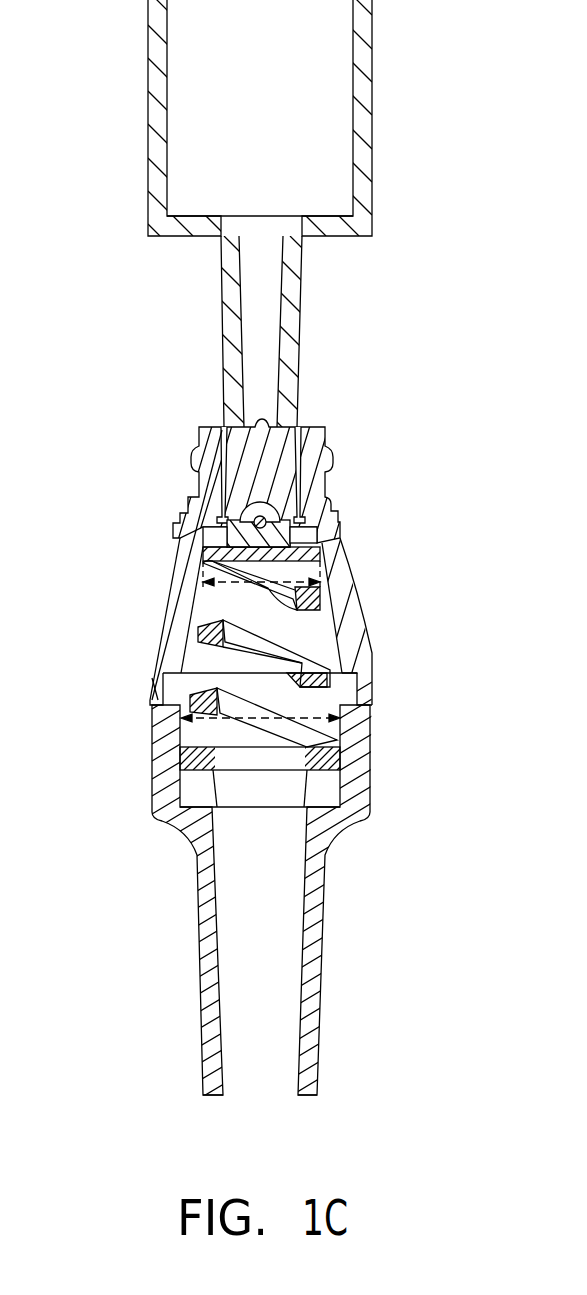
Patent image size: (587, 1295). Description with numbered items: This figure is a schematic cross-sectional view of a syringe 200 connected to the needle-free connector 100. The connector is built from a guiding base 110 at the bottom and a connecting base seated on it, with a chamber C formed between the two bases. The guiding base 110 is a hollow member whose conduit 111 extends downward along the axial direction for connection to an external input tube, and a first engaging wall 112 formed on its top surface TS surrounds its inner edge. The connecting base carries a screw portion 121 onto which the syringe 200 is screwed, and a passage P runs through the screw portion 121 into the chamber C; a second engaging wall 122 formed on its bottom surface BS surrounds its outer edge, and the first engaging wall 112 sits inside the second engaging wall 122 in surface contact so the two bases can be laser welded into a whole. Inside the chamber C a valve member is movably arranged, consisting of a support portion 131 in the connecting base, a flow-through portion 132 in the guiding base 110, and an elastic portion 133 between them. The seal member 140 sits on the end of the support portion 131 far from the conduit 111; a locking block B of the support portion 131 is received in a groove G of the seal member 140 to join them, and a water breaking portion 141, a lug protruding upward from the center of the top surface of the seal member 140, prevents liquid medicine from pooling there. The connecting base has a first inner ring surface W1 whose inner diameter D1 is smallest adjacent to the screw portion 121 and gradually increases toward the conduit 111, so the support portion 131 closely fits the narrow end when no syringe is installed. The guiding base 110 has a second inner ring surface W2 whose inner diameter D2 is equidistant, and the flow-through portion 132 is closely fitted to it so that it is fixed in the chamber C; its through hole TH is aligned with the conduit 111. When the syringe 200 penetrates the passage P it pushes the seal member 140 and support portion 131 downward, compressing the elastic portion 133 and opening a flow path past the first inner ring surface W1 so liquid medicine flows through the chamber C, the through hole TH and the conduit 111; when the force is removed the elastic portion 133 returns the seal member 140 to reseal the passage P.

The syringe 200 is at (363, 128).
The seal member 140 is at (270, 450).
The water breaking portion 141 is at (262, 498).
The locking block B is at (284, 511).
The groove G is at (222, 427).
The screw portion 121 is at (203, 488).
The passage P is at (218, 512).
The chamber C is at (200, 598).
The bottom surface BS is at (170, 664).
The second engaging wall 122 is at (158, 683).
The first inner ring surface W1 is at (328, 623).
The support portion 131 is at (322, 541).
The inner diameter of the first inner ring surface D1 is at (330, 582).
The elastic portion 133 is at (357, 672).
The first engaging wall 112 is at (150, 693).
The inner diameter of the second inner ring surface D2 is at (345, 718).
The guiding base 110 is at (358, 791).
The flow-through portion 132 is at (342, 760).
The through hole TH is at (259, 762).
The top surface TS is at (181, 738).
The second inner ring surface W2 is at (212, 753).
The conduit 111 is at (312, 942).
The needle-free connector 100 is at (522, 1137).